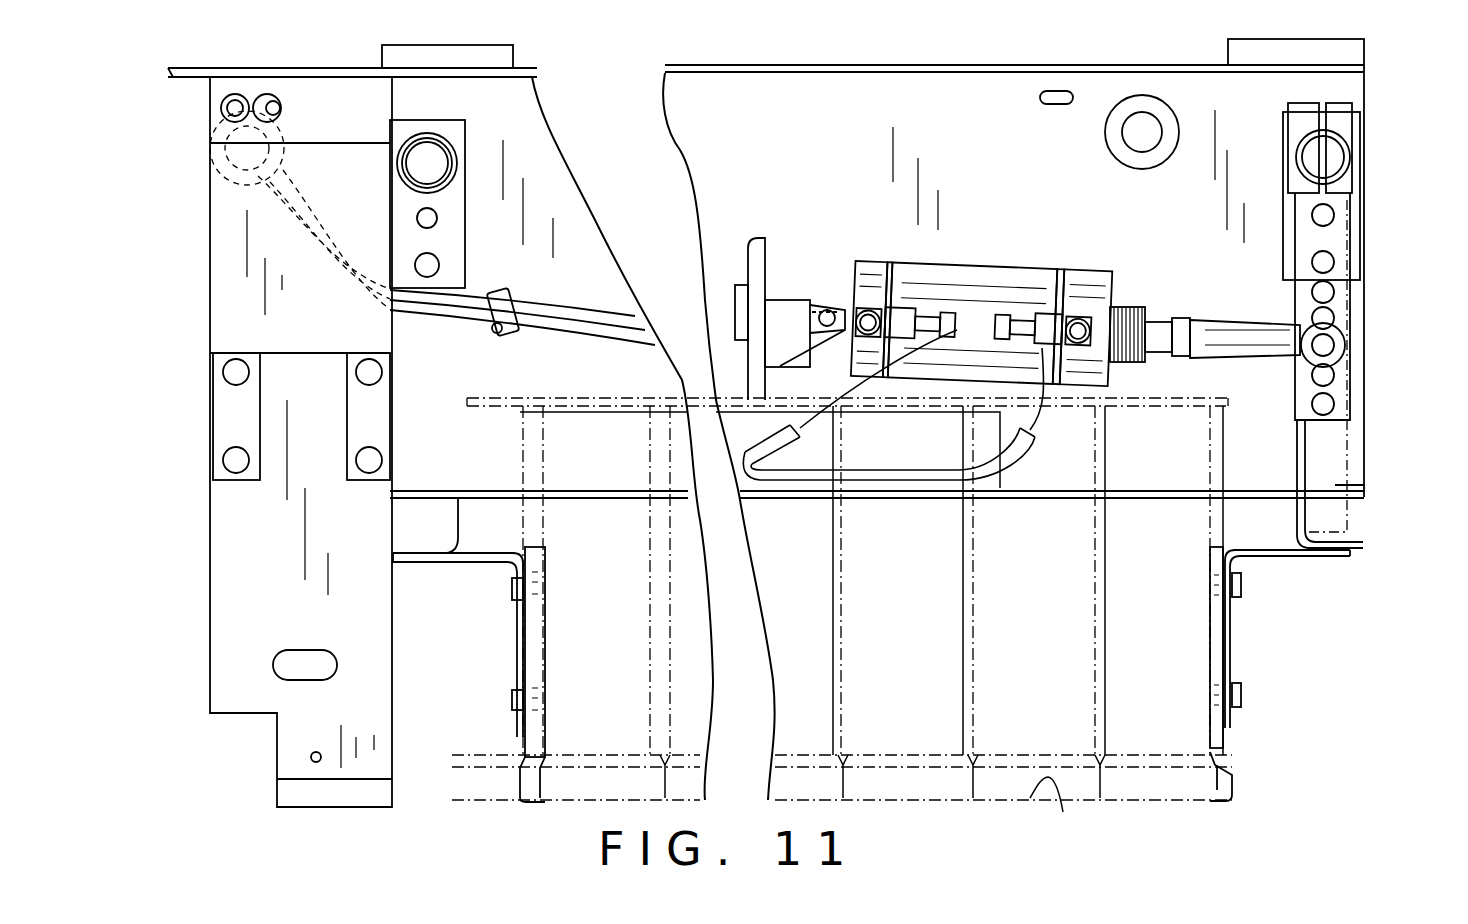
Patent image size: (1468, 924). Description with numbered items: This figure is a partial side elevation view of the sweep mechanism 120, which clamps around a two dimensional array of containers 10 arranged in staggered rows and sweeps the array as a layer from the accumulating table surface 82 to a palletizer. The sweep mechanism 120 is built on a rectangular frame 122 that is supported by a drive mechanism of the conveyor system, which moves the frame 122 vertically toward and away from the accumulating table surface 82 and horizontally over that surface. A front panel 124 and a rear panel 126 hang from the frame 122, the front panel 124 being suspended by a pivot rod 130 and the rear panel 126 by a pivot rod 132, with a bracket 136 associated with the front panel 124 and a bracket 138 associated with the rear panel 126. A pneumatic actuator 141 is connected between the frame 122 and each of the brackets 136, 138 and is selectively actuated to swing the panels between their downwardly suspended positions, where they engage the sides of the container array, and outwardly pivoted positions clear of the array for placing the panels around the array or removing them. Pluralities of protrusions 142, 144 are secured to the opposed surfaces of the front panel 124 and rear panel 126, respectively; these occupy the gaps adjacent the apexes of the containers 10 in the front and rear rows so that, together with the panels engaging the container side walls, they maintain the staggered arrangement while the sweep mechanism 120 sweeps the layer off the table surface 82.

The container 10 is at (907, 680).
The accumulating table surface 82 is at (1053, 807).
The sweep mechanism 120 is at (1396, 218).
The frame 122 is at (957, 105).
The front panel 124 is at (1232, 620).
The rear panel 126 is at (520, 645).
The pivot rod 130 is at (1340, 140).
The pivot rod 132 is at (402, 137).
The bracket 136 is at (1356, 344).
The bracket 138 is at (385, 333).
The pneumatic actuator 141 is at (956, 285).
The protrusions 142 is at (1208, 660).
The protrusions 144 is at (545, 660).